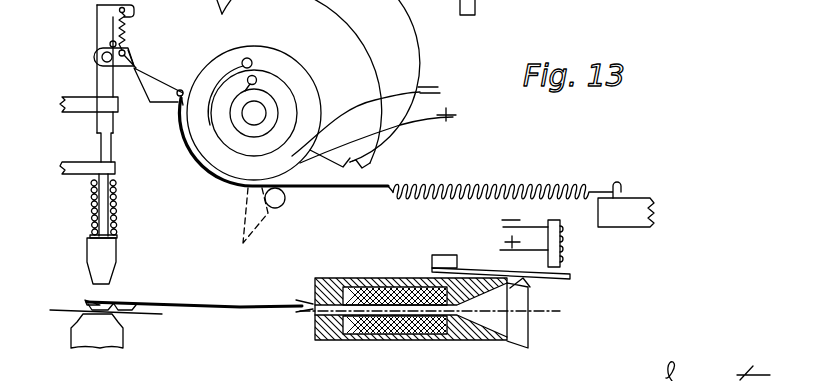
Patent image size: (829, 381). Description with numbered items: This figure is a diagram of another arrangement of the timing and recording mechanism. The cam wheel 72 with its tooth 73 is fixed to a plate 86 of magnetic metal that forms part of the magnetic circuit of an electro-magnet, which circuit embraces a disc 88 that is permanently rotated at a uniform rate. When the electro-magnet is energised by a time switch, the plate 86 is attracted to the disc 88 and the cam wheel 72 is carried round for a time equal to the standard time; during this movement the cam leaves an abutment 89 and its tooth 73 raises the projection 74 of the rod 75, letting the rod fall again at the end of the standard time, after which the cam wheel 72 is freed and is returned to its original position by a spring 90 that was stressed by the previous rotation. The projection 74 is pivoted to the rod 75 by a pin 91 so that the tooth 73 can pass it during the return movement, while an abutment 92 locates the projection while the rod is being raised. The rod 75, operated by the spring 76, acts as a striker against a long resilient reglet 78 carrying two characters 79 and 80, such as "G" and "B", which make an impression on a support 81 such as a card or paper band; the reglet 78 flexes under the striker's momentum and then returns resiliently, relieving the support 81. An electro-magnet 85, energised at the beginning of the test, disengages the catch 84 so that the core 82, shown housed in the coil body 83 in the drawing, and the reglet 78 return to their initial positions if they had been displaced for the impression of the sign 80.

The cam wheel 72 is at (254, 113).
The tooth of the cam 73 is at (167, 88).
The projection of the rod 74 is at (127, 58).
The rod 75 is at (105, 153).
The spring 76 is at (92, 205).
The resilient reglet 78 is at (213, 306).
The character 79 is at (87, 302).
The character 80 is at (123, 304).
The support 81 is at (140, 316).
The core 82 is at (305, 302).
The tube with coils 83 is at (363, 287).
The catch 84 is at (507, 274).
The electro-magnet 85 is at (560, 253).
The plate of magnetic metal 86 is at (345, 82).
The disc 88 is at (350, 43).
The abutment 89 is at (283, 203).
The spring 90 is at (386, 184).
The pin 91 is at (101, 55).
The abutment 92 is at (110, 43).